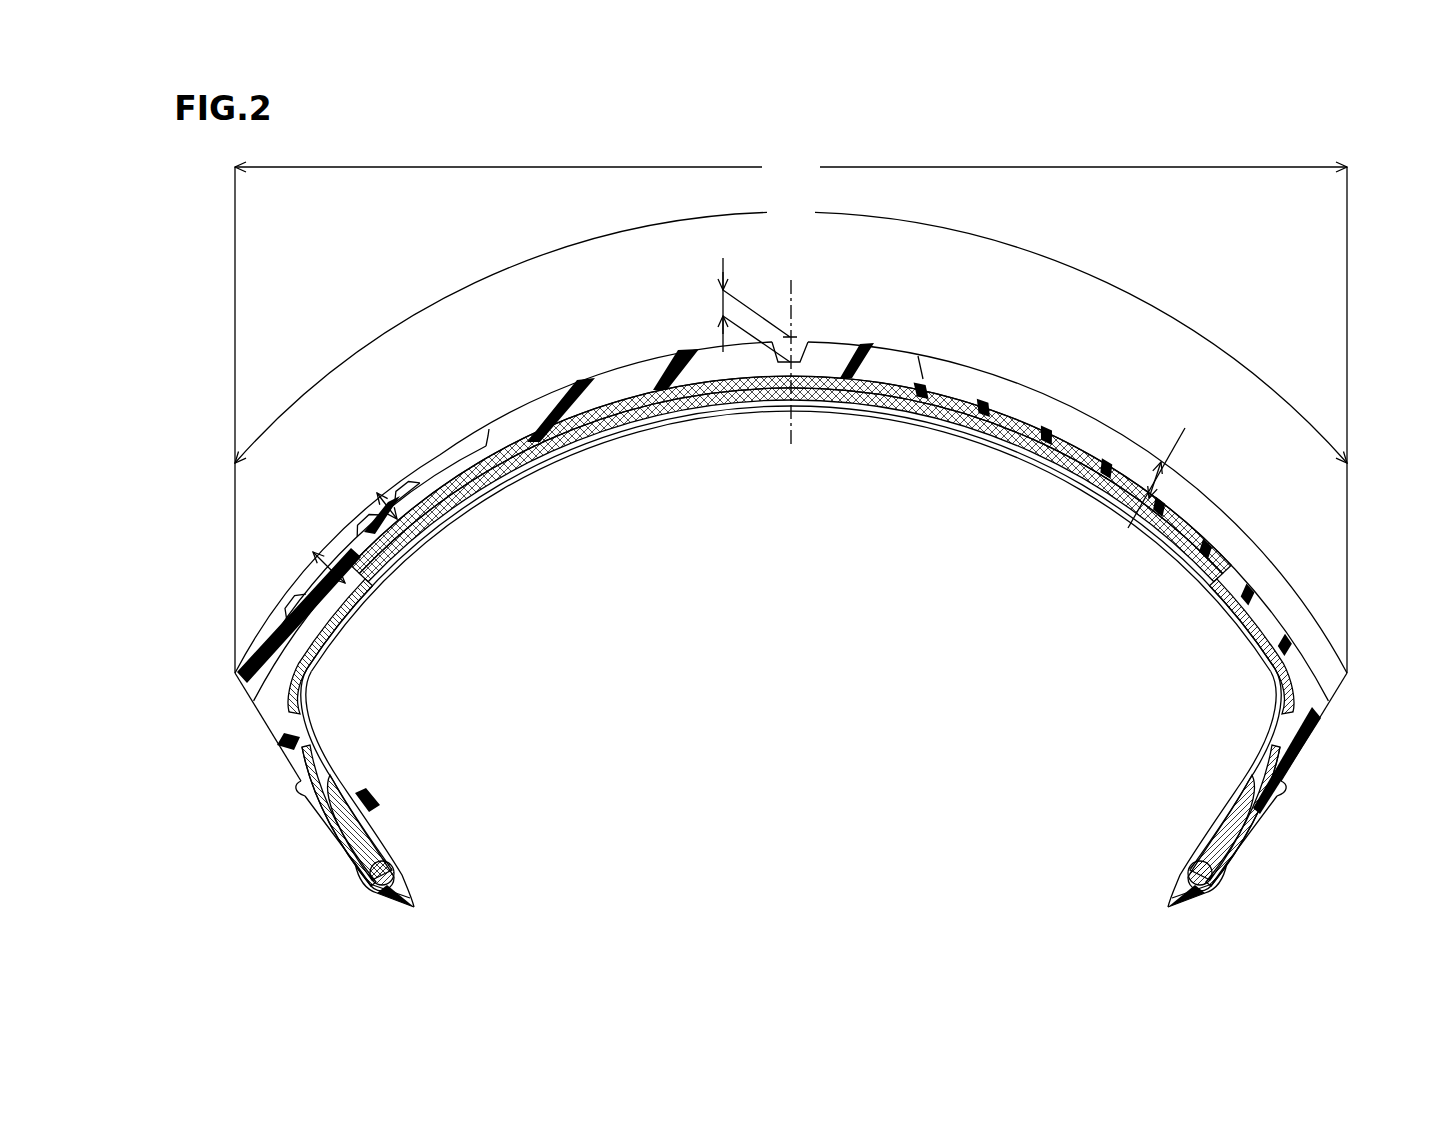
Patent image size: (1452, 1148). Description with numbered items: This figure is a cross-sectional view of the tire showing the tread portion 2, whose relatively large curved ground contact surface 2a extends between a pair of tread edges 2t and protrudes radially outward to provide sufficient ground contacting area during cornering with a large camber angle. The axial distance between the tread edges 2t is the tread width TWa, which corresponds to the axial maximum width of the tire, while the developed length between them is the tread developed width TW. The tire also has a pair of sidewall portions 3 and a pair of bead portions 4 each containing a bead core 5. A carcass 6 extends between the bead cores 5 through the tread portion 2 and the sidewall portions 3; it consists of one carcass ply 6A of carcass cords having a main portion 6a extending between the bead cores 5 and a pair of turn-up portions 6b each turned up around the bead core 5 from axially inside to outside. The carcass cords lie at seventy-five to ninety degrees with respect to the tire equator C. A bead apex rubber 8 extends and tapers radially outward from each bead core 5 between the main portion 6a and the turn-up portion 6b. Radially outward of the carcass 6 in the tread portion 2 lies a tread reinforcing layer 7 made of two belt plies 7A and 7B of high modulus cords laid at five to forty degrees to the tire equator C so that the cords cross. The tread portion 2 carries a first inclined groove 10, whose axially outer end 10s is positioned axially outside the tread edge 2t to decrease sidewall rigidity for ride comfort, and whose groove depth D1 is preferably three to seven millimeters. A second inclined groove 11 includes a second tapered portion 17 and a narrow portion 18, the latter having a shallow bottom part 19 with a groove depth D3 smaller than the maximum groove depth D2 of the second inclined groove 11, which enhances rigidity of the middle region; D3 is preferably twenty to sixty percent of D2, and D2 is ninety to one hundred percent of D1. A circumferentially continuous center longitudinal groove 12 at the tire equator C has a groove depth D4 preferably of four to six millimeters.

The tread portion 2 is at (1144, 400).
The ground contact surface 2a is at (1080, 417).
The tread edge 2t is at (235, 673).
The sidewall portion 3 is at (1297, 792).
The bead portion 4 is at (1236, 876).
The bead core 5 is at (1190, 877).
The carcass 6 is at (1145, 695).
The carcass ply 6A is at (791, 656).
The main portion 6a is at (1284, 707).
The turn-up portion 6b is at (1268, 752).
The tread reinforcing layer 7 is at (413, 648).
The belt ply 7A is at (428, 537).
The belt ply 7B is at (465, 502).
The bead apex rubber 8 is at (1212, 826).
The first inclined groove 10 is at (966, 381).
The axially outer end of first inclined groove 10s is at (1332, 700).
The second inclined groove 11 is at (452, 458).
The center longitudinal groove 12 is at (801, 350).
The second tapered portion 17 is at (469, 444).
The narrow portion 18 is at (370, 517).
The shallow bottom part 19 is at (407, 493).
The tire equator C is at (789, 375).
The tread developed width TW is at (791, 331).
The tread width TWa is at (791, 168).
The groove depth of first inclined groove D1 is at (1157, 478).
The maximum groove depth of second inclined groove D2 is at (335, 570).
The groove depth of shallow bottom part D3 is at (388, 505).
The groove depth of center longitudinal groove D4 is at (738, 310).